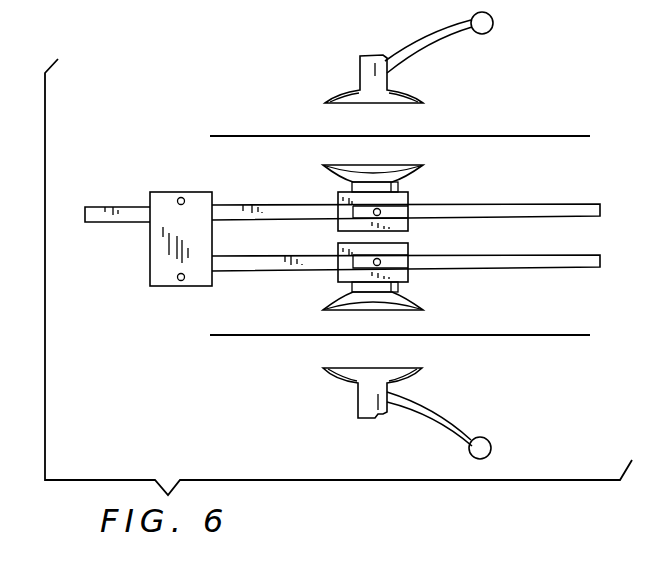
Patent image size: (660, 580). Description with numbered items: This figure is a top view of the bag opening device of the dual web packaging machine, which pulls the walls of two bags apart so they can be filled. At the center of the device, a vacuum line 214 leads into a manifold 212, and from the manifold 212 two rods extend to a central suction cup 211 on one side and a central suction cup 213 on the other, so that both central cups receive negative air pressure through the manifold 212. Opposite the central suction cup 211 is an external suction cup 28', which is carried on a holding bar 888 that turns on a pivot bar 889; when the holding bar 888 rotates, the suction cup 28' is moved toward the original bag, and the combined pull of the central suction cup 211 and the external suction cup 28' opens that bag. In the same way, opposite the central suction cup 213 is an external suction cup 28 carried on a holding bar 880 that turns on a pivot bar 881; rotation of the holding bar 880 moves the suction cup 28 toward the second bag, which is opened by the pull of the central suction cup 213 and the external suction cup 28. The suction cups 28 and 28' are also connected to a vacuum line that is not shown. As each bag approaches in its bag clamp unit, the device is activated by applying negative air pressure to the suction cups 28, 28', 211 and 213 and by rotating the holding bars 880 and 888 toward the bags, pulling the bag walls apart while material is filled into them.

The holding bar 888 is at (425, 40).
The pivot bar 889 is at (494, 24).
The external suction cup 28' is at (411, 79).
The central suction cup 211 is at (421, 171).
The manifold 212 is at (172, 192).
The vacuum line 214 is at (128, 223).
The central suction cup 213 is at (421, 297).
The external suction cup 28 is at (415, 393).
The holding bar 880 is at (457, 432).
The pivot bar 881 is at (492, 452).